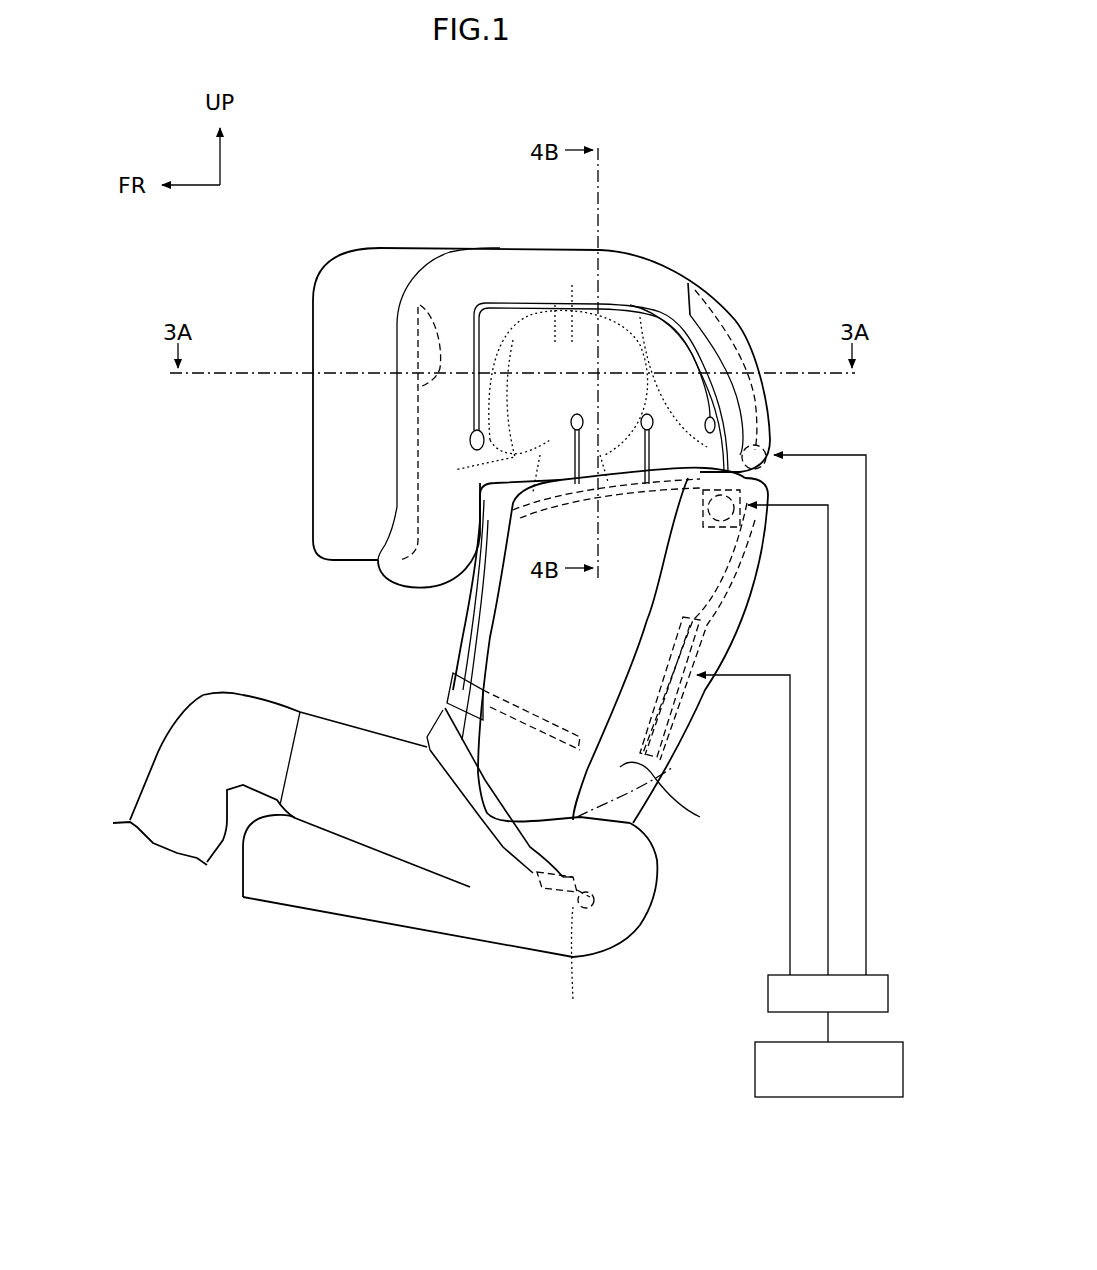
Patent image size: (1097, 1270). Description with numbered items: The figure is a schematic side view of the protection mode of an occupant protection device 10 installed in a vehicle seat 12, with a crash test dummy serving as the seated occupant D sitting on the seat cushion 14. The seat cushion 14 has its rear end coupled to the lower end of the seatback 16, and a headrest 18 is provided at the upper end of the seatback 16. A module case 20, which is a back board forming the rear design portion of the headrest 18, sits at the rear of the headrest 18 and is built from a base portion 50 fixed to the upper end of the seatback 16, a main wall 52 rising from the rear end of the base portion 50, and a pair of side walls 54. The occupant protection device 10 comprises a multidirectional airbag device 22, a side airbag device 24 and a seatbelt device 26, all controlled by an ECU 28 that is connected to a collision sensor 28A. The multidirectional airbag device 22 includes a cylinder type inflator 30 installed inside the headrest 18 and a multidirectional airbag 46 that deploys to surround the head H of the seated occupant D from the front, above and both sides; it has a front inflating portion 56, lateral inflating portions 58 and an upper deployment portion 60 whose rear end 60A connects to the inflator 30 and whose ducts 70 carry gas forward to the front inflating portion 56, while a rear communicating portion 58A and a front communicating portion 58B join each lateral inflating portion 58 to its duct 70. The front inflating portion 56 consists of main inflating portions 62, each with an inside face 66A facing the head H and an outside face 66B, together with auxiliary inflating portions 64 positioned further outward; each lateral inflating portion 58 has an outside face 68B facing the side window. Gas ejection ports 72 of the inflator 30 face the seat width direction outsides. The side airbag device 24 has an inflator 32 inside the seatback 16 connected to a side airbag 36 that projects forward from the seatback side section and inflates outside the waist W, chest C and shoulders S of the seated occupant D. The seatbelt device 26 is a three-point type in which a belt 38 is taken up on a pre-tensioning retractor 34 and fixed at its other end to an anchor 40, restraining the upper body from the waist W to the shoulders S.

The occupant protection device 10 is at (158, 291).
The vehicle seat 12 is at (770, 552).
The seat cushion 14 is at (633, 907).
The seatback 16 is at (727, 607).
The headrest 18 is at (687, 282).
The module case 20 is at (742, 322).
The multidirectional airbag device 22 is at (760, 353).
The side airbag device 24 is at (680, 720).
The seatbelt device 26 is at (420, 716).
The ECU 28 is at (767, 993).
The collision sensor 28A is at (754, 1059).
The inflator 30 is at (767, 445).
The inflator 32 is at (690, 690).
The retractor 34 is at (705, 500).
The side airbag 36 is at (640, 765).
The belt 38 is at (462, 640).
The anchor 40 is at (565, 951).
The multidirectional airbag 46 is at (378, 245).
The base portion 50 is at (753, 474).
The main wall 52 is at (740, 300).
The side walls 54 is at (725, 330).
The front inflating portion 56 is at (308, 440).
The lateral inflating portions 58 is at (633, 290).
The communicating portion 58A is at (626, 389).
The communicating portion 58B is at (483, 488).
The upper deployment portion 60 is at (563, 250).
The rear end 60A is at (760, 390).
The main inflating portions 62 is at (330, 528).
The auxiliary inflating portions 64 is at (396, 503).
The inside face 66A is at (434, 432).
The outside face 66B is at (312, 332).
The outside face 68B is at (524, 365).
The ducts 70 is at (497, 249).
The gas ejection ports 72 is at (893, 449).
The chest C is at (490, 567).
The seated occupant D is at (200, 690).
The head H is at (533, 440).
The shoulders S is at (636, 487).
The waist W is at (547, 833).